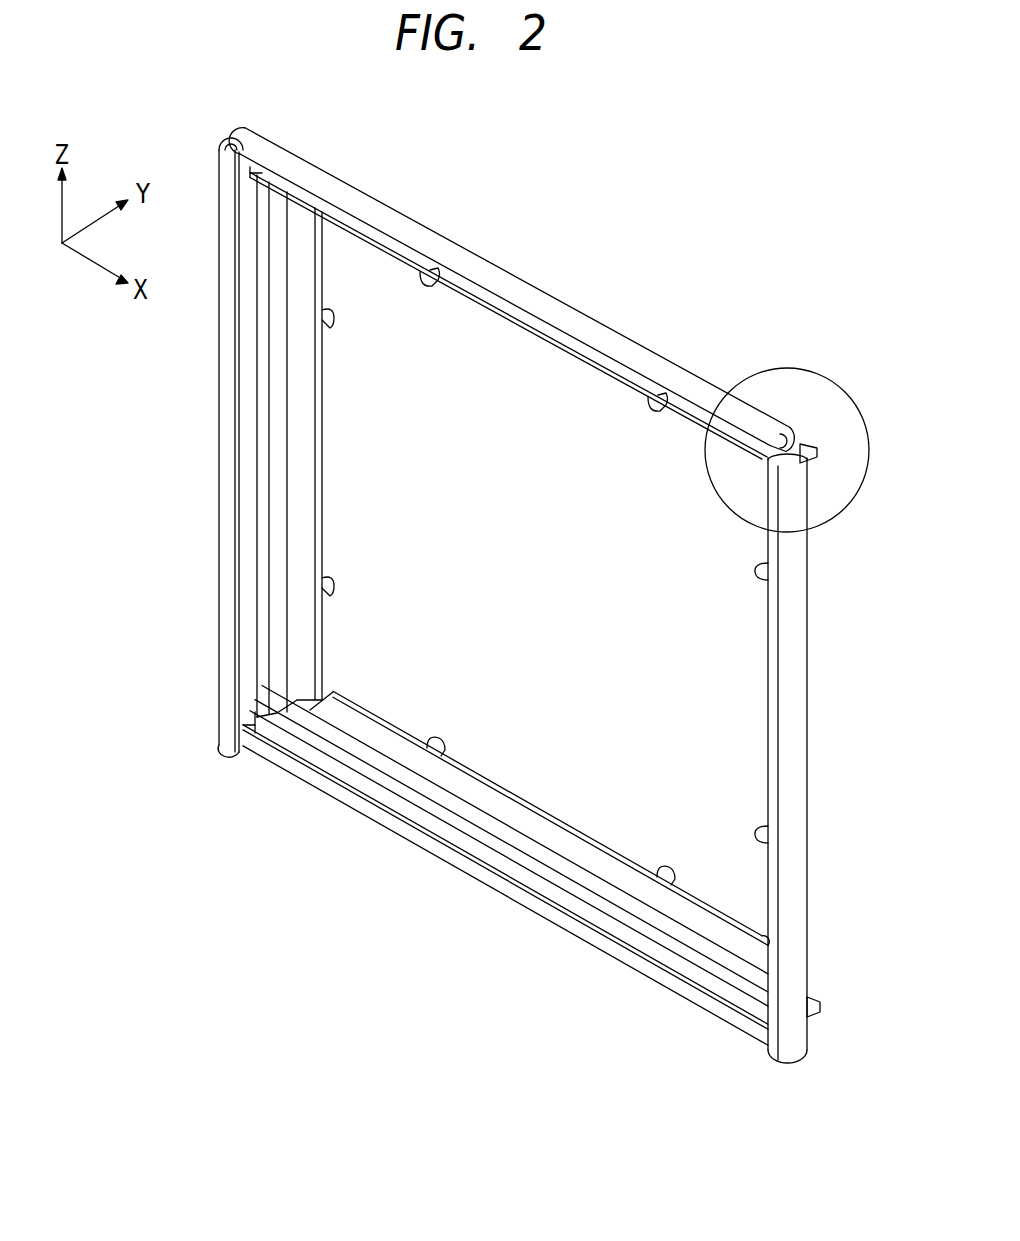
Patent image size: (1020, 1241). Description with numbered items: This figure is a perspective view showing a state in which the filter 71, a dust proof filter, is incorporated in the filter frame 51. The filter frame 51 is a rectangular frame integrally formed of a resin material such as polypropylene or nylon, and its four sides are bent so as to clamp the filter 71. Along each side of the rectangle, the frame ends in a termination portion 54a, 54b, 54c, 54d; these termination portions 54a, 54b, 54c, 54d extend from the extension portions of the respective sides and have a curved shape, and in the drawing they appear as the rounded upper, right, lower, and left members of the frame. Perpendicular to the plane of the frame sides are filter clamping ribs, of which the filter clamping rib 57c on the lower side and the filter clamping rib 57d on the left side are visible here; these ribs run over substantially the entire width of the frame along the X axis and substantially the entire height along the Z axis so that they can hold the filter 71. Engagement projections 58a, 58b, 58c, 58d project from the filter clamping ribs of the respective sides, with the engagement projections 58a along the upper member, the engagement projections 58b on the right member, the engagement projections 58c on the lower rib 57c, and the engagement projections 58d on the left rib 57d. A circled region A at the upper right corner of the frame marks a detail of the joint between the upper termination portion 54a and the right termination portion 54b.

The filter frame 51 is at (432, 185).
The termination portion 54a is at (572, 312).
The termination portion 54b is at (792, 645).
The termination portion 54c is at (540, 912).
The termination portion 54d is at (230, 397).
The filter clamping rib 57c is at (497, 812).
The filter clamping rib 57d is at (300, 500).
The engagement projections 58a is at (432, 272).
The engagement projections 58b is at (762, 575).
The engagement projections 58c is at (430, 752).
The engagement projections 58d is at (332, 318).
The filter 71 is at (733, 727).
The detail region A is at (792, 450).